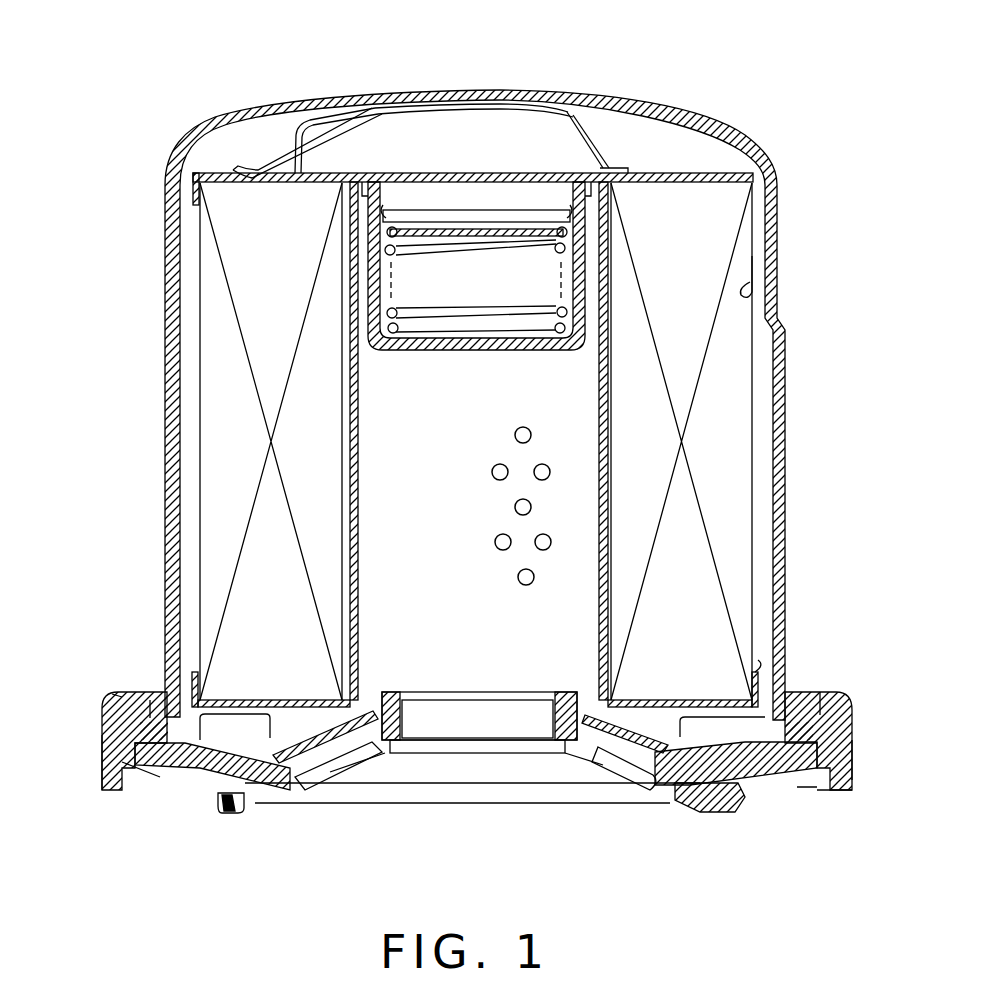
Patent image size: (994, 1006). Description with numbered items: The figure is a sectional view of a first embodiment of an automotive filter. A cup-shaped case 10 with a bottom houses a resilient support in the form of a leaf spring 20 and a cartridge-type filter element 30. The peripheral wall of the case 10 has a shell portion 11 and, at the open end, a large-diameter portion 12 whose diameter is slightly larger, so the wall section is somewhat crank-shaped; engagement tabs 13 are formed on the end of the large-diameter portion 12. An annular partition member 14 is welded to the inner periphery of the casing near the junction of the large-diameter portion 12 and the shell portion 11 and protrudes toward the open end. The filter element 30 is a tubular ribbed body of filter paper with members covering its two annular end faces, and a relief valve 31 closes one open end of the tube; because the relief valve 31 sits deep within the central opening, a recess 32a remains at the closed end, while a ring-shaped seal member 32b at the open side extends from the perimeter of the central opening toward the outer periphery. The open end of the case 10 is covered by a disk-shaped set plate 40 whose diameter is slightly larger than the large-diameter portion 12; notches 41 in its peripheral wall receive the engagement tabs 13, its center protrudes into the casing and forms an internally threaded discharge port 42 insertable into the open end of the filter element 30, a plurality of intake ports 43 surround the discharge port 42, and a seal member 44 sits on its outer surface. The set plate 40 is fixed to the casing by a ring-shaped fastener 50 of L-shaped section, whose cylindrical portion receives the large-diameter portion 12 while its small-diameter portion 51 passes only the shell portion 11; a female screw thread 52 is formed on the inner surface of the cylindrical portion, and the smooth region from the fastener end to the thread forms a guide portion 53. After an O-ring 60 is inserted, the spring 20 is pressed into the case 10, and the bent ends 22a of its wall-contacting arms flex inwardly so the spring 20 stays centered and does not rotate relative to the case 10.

The case 10 is at (786, 176).
The shell portion 11 is at (788, 438).
The large-diameter portion 12 is at (132, 716).
The engagement tabs 13 is at (825, 790).
The annular partition member 14 is at (192, 688).
The leaf spring 20 is at (596, 144).
The ends of the wall-contacting arms 22a is at (745, 291).
The filter element 30 is at (694, 174).
The relief valve 31 is at (436, 228).
The recess 32a is at (526, 190).
The ring-shaped seal member 32b is at (327, 730).
The set plate 40 is at (766, 784).
The notches 41 is at (852, 760).
The discharge port 42 is at (550, 723).
The intake ports 43 is at (340, 772).
The seal member 44 is at (233, 800).
The ring-shaped fastener 50 is at (101, 736).
The small-diameter portion 51 is at (153, 707).
The screw thread 52 is at (153, 760).
The guide portion 53 is at (128, 793).
The O-ring 60 is at (122, 697).